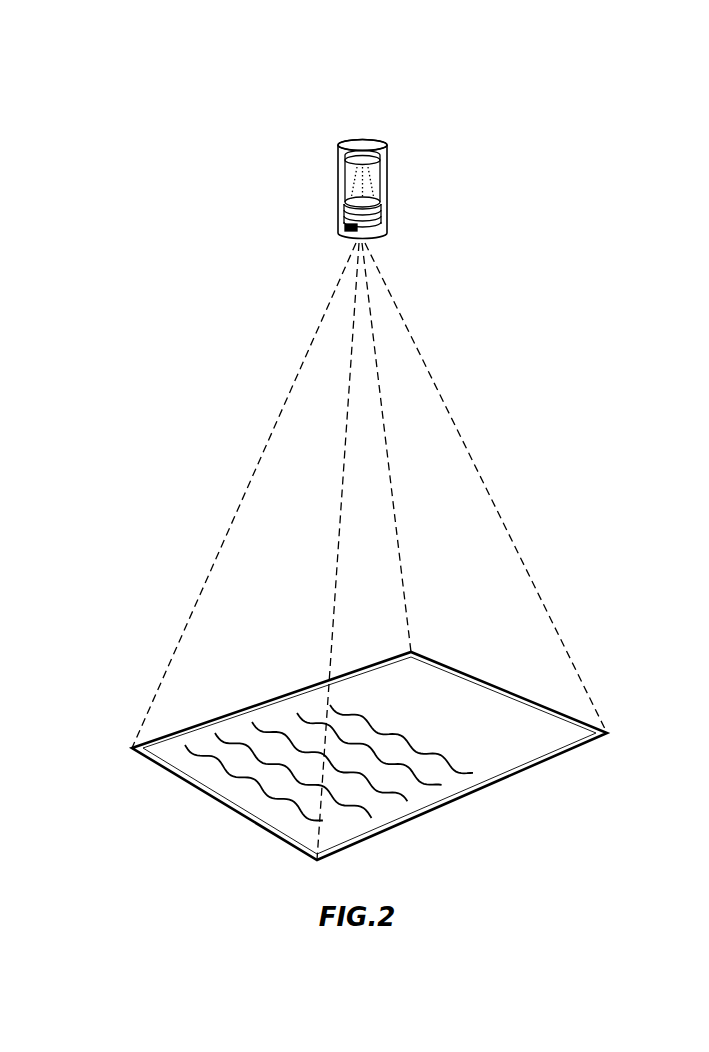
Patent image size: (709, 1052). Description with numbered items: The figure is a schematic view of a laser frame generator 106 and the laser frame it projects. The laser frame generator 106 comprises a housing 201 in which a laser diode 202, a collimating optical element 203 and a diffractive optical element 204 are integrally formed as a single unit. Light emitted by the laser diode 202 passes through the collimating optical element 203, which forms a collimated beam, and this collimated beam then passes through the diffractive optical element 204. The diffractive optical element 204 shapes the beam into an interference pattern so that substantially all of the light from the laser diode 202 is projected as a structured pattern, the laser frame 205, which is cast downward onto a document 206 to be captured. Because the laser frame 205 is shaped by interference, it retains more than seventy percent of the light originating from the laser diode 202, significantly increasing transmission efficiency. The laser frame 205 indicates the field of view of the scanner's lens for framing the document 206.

The laser frame generator 106 is at (361, 141).
The housing 201 is at (340, 172).
The laser diode 202 is at (367, 161).
The collimating optical element 203 is at (376, 214).
The diffractive optical element 204 is at (345, 228).
The laser frame 205 is at (338, 756).
The document 206 is at (507, 744).